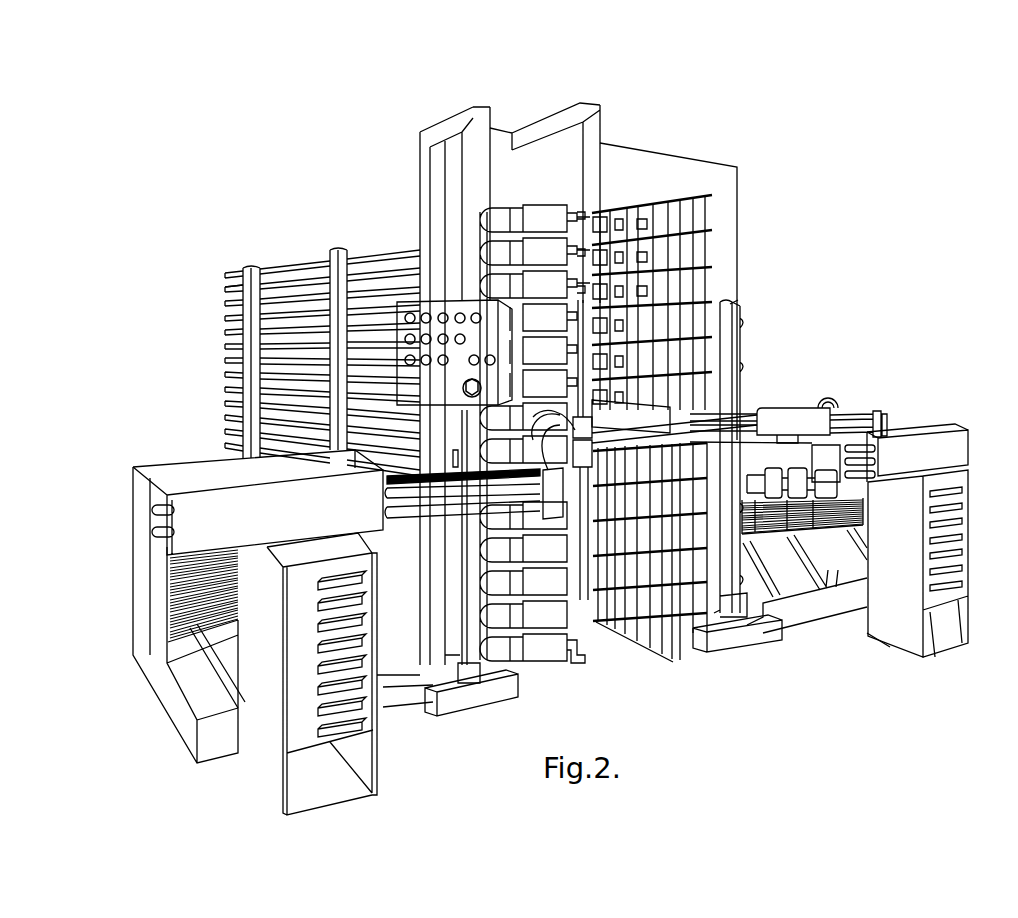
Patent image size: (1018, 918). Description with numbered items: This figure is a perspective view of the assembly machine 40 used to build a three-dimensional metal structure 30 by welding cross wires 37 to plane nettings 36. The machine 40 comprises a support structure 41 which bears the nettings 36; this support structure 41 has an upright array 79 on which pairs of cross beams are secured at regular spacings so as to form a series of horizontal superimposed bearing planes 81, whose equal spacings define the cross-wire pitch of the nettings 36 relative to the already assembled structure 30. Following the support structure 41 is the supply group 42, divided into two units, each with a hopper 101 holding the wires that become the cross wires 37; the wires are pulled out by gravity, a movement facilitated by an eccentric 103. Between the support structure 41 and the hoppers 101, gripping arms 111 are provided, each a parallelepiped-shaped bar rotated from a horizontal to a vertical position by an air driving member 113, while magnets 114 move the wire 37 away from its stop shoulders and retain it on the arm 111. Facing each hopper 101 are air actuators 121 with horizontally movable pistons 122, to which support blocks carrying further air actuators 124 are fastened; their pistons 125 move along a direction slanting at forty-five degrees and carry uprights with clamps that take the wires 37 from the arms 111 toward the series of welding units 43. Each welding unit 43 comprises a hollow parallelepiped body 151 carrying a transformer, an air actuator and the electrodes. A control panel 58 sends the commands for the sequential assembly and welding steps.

The three-dimensional metal structure 30 is at (655, 182).
The plane netting 36 is at (683, 662).
The cross wire 37 is at (802, 527).
The assembly machine 40 is at (873, 321).
The support structure 41 is at (292, 246).
The supply group 42 is at (183, 432).
The welding unit 43 is at (543, 186).
The control panel 58 is at (495, 328).
The upright array 79 is at (250, 268).
The horizontal bearing plane 81 is at (226, 291).
The hopper 101 is at (117, 607).
The eccentric 103 is at (752, 483).
The gripping arm 111 is at (735, 341).
The air driving member 113 is at (485, 695).
The magnet 114 is at (738, 306).
The air actuator 121 is at (205, 515).
The piston 122 is at (386, 497).
The air actuator 124 is at (788, 407).
The piston 125 is at (858, 411).
The body 151 is at (545, 645).